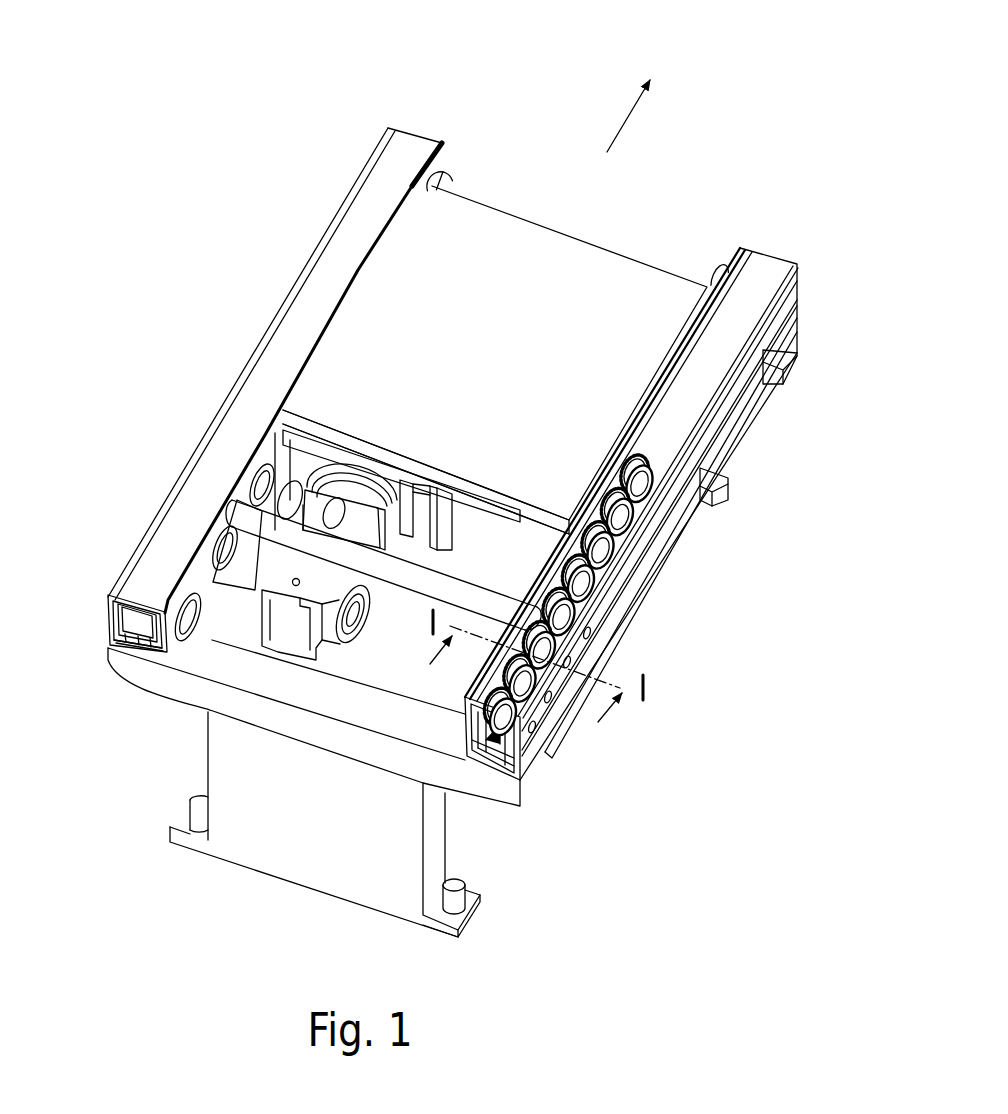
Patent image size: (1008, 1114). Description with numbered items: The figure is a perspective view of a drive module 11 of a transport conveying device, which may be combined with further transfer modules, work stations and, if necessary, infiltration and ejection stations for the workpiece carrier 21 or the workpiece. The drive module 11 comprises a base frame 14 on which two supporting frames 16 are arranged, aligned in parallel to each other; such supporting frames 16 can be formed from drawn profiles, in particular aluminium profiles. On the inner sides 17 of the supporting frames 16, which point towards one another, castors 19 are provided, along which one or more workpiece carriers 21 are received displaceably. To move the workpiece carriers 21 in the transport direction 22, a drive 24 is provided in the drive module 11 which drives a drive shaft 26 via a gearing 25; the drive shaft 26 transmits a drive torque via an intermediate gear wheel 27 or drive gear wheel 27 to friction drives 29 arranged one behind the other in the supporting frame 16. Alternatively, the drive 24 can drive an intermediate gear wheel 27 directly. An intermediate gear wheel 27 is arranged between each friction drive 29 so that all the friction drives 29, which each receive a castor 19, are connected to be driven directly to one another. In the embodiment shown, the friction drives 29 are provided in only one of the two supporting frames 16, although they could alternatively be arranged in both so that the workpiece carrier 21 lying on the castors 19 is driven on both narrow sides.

The drive module 11 is at (680, 98).
The base frame 14 is at (468, 857).
The supporting frame 16 is at (100, 627).
The inner side 17 is at (444, 163).
The castor 19 is at (170, 592).
The workpiece carrier 21 is at (536, 268).
The transport direction 22 is at (626, 118).
The drive 24 is at (307, 517).
The gearing 25 is at (290, 642).
The drive shaft 26 is at (236, 606).
The intermediate gear wheel 27 is at (560, 653).
The friction drive 29 is at (496, 766).